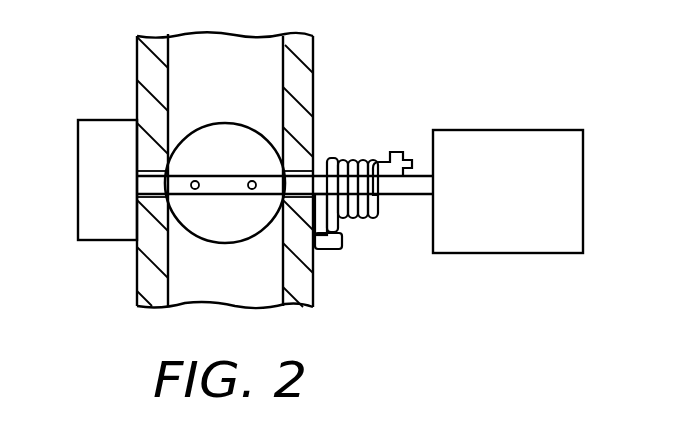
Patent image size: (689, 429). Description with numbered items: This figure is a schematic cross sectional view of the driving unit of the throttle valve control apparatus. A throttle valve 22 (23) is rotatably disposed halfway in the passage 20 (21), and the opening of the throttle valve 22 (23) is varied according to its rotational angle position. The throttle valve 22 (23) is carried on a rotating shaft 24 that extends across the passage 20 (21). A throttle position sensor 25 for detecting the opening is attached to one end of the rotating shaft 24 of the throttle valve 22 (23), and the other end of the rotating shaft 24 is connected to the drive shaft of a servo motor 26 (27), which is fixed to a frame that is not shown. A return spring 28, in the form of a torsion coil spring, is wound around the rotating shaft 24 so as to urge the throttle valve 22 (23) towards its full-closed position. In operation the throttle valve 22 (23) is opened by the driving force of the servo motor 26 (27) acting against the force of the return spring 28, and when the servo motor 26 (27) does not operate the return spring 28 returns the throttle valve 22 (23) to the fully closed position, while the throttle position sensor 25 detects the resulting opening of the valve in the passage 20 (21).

The passage 20 is at (262, 170).
The passage 21 is at (314, 62).
The throttle valve 22 is at (225, 208).
The throttle valve 23 is at (215, 236).
The rotating shaft 24 is at (205, 189).
The throttle position sensor 25 is at (79, 216).
The servo motor 26 is at (531, 172).
The servo motor 27 is at (553, 138).
The return spring 28 is at (362, 219).